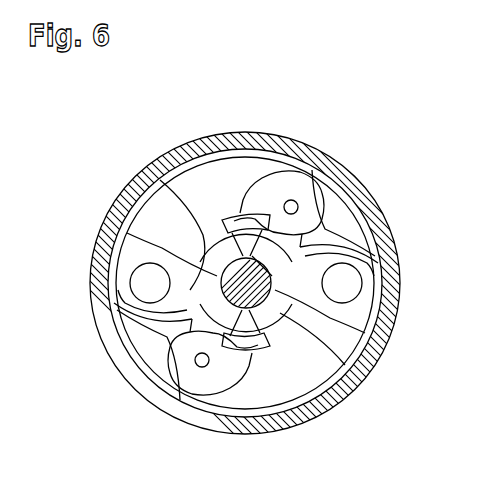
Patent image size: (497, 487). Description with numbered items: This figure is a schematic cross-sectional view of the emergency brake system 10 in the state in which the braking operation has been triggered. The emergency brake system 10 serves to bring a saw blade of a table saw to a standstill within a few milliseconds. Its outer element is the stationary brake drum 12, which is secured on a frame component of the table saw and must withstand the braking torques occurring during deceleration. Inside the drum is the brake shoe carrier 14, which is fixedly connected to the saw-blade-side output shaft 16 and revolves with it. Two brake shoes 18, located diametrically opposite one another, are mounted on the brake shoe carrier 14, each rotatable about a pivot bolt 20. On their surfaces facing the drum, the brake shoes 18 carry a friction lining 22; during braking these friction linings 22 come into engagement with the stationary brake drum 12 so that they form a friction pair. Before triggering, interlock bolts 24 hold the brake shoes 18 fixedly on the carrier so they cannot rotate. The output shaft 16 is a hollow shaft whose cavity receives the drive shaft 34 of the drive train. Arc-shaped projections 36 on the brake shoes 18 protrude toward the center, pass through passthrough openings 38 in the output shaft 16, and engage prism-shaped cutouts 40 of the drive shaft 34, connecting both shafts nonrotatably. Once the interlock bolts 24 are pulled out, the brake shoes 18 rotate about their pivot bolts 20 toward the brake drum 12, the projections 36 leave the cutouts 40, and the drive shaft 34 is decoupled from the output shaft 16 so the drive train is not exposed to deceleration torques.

The emergency brake system 10 is at (404, 108).
The brake drum 12 is at (375, 203).
The brake shoe carrier 14 is at (160, 327).
The output shaft 16 is at (265, 170).
The brake shoes 18 is at (123, 192).
The pivot bolt 20 is at (150, 283).
The friction lining 22 is at (215, 160).
The interlock bolts 24 is at (291, 207).
The drive shaft 34 is at (365, 333).
The arc-shaped projections 36 is at (158, 225).
The passthrough openings 38 is at (247, 165).
The prism-shaped cutouts 40 is at (250, 238).